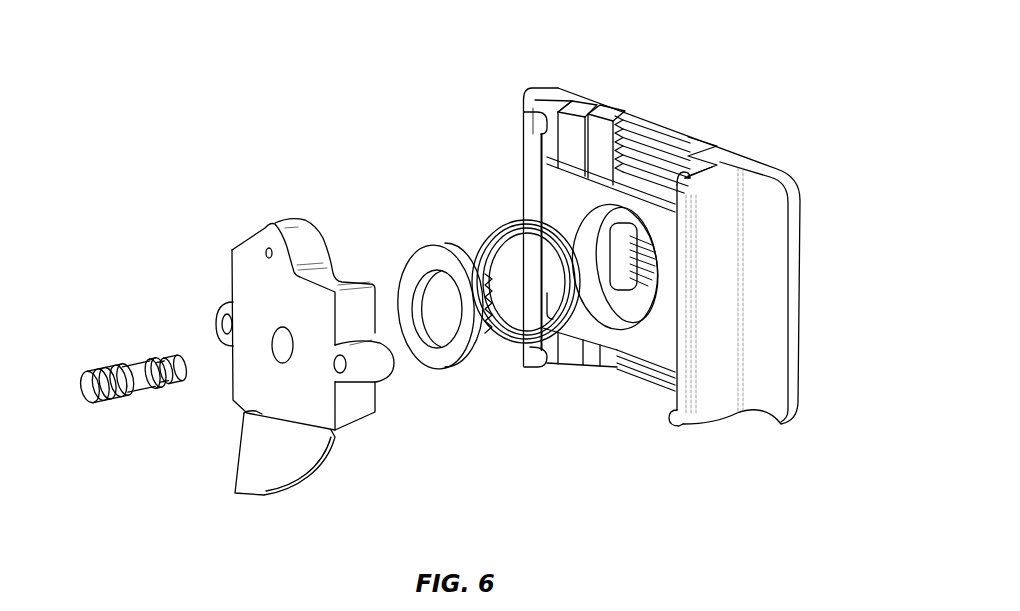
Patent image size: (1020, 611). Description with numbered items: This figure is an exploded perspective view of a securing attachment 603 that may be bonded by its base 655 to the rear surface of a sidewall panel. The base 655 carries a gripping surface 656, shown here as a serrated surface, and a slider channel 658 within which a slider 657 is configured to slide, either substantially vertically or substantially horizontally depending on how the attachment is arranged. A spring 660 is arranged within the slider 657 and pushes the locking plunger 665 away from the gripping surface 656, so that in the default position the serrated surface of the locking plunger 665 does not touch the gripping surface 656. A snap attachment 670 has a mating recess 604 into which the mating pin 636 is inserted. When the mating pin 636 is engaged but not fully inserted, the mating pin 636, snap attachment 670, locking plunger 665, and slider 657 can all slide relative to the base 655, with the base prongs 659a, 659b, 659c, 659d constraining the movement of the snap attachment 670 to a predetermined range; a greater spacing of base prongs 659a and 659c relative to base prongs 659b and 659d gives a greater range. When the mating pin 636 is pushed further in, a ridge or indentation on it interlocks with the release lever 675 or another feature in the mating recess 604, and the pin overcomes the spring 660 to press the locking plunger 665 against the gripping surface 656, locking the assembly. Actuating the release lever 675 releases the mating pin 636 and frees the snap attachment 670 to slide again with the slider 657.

The securing attachment 603 is at (695, 256).
The mating recess 604 is at (283, 347).
The mating pin 636 is at (87, 387).
The base 655 is at (770, 365).
The gripping surface 656 is at (660, 133).
The slider 657 is at (657, 333).
The slider channel 658 is at (553, 117).
The base prong 659a is at (681, 177).
The base prong 659b is at (668, 413).
The base prong 659c is at (535, 118).
The base prong 659d is at (542, 368).
The spring 660 is at (495, 218).
The locking plunger 665 is at (424, 257).
The snap attachment 670 is at (267, 308).
The release lever 675 is at (270, 458).